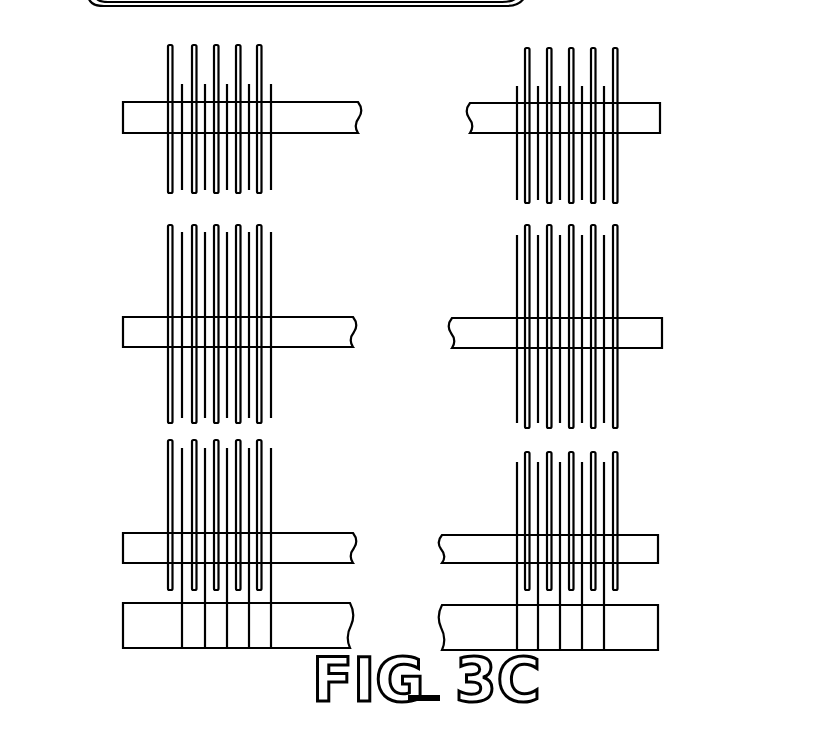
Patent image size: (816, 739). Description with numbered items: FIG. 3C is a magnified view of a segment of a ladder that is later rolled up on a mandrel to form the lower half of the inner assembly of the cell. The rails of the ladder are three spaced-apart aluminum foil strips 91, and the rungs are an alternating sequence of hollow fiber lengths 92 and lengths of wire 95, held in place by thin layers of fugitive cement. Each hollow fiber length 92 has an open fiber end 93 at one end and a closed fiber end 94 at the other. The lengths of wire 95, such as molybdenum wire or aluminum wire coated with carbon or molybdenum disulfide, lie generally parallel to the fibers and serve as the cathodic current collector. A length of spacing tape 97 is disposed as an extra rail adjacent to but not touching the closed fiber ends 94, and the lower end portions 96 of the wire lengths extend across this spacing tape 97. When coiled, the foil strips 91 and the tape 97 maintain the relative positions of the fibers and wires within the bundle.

The aluminum foil strips 91 is at (133, 122).
The hollow fiber lengths 92 is at (619, 60).
The open fiber ends 93 is at (594, 45).
The closed fiber ends 94 is at (167, 577).
The lengths of wire 95 is at (272, 500).
The lower end portions of wire lengths 96 is at (605, 630).
The wraps of spacing tape 97 is at (150, 640).